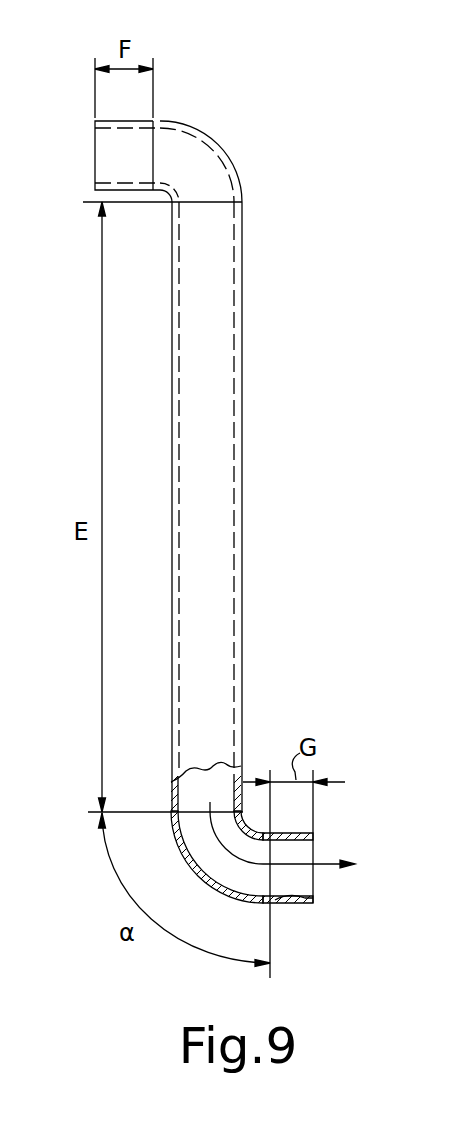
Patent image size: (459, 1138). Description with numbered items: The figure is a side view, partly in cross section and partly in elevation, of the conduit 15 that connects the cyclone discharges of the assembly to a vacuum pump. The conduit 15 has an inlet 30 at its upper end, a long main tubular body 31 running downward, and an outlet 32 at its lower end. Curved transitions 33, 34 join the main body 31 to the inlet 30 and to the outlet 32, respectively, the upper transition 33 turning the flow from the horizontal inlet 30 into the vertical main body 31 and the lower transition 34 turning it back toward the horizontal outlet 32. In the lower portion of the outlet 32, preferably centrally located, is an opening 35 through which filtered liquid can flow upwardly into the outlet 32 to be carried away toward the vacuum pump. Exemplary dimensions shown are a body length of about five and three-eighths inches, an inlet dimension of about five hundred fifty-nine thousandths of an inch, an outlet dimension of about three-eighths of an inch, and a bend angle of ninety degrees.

The conduit 15 is at (194, 515).
The inlet 30 is at (132, 183).
The main tubular body 31 is at (233, 294).
The outlet 32 is at (303, 843).
The curved transition 33 is at (222, 148).
The curved transition 34 is at (183, 857).
The opening 35 is at (285, 901).